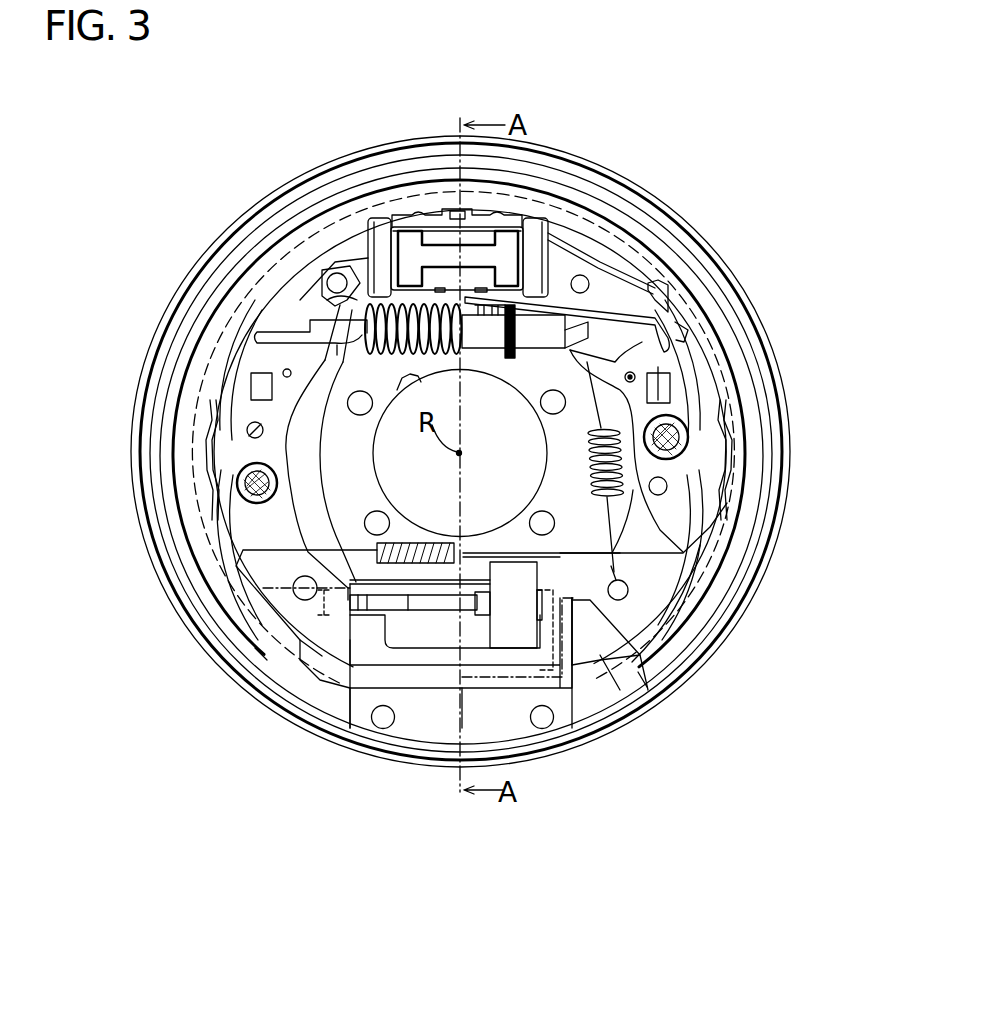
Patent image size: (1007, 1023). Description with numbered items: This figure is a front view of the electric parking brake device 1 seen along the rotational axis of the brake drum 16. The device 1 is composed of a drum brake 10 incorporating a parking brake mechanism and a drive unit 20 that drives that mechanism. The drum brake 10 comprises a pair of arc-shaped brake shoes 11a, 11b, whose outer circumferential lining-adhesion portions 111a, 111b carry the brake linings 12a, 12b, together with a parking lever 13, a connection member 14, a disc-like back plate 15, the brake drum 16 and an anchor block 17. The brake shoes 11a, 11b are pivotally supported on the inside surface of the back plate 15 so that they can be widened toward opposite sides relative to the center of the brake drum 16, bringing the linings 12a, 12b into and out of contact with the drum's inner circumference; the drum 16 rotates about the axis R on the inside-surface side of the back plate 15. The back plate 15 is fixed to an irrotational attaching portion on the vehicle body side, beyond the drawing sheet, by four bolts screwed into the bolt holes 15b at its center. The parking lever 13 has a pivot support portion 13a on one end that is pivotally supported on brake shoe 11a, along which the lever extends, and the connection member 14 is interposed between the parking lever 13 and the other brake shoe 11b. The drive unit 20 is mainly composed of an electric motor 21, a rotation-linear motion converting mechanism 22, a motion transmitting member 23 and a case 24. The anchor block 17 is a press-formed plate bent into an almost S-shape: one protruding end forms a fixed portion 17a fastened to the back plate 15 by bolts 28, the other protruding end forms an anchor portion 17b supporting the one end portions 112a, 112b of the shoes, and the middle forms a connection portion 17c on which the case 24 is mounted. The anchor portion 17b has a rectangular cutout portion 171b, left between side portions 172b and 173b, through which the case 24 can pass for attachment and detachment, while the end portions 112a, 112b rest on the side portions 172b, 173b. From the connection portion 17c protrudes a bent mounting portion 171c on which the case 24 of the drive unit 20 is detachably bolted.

The electric parking brake device 1 is at (596, 64).
The drum brake 10 is at (604, 153).
The brake shoe 11a is at (232, 486).
The brake shoe 11b is at (688, 385).
The brake lining 12a is at (228, 497).
The brake lining 12b is at (715, 418).
The parking lever 13 is at (318, 515).
The pivot support portion 13a is at (327, 273).
The connection member 14 is at (550, 326).
The back plate 15 is at (300, 508).
The bolt holes 15b is at (560, 397).
The brake drum 16 is at (797, 456).
The anchor block 17 is at (578, 838).
The fixed portion 17a is at (505, 740).
The anchor portion 17b is at (432, 658).
The connection portion 17c is at (447, 682).
The drive unit 20 is at (632, 556).
The electric motor 21 is at (575, 605).
The rotation-linear motion converting mechanism 22 is at (330, 652).
The motion transmitting member 23 is at (394, 622).
The case 24 is at (563, 588).
The bolts 28 is at (542, 726).
The lining-adhesion portion 111a is at (252, 385).
The lining-adhesion portion 111b is at (680, 340).
The one end portion 112a is at (291, 604).
The one end portion 112b is at (577, 641).
The cutout portion 171b is at (410, 645).
The mounting portion 171c is at (580, 628).
The side portion 172b is at (317, 653).
The side portion 173b is at (600, 645).